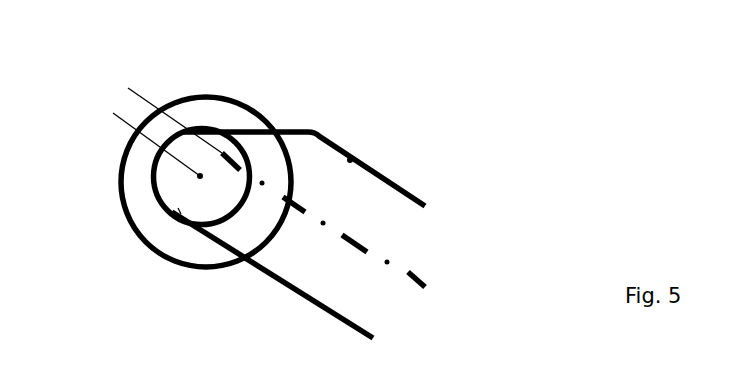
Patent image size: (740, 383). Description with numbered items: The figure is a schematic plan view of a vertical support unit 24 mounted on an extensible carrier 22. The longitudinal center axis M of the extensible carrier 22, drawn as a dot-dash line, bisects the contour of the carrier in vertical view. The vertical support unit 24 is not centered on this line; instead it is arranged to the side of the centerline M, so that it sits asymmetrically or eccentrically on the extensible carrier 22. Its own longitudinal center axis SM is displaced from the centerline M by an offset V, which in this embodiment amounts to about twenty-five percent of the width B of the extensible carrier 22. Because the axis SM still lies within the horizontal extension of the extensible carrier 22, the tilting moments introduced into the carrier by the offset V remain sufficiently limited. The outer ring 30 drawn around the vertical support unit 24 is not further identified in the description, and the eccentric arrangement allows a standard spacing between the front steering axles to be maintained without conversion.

The outer ring / tube 30 is at (207, 110).
The extensible carrier 22 is at (407, 186).
The vertical support unit 24 is at (180, 213).
The longitudinal center axis of the vertical support unit SM is at (200, 176).
The longitudinal center axis of the extensible carrier M is at (413, 279).
The offset V is at (133, 98).
The width of the extensible carrier B is at (312, 297).